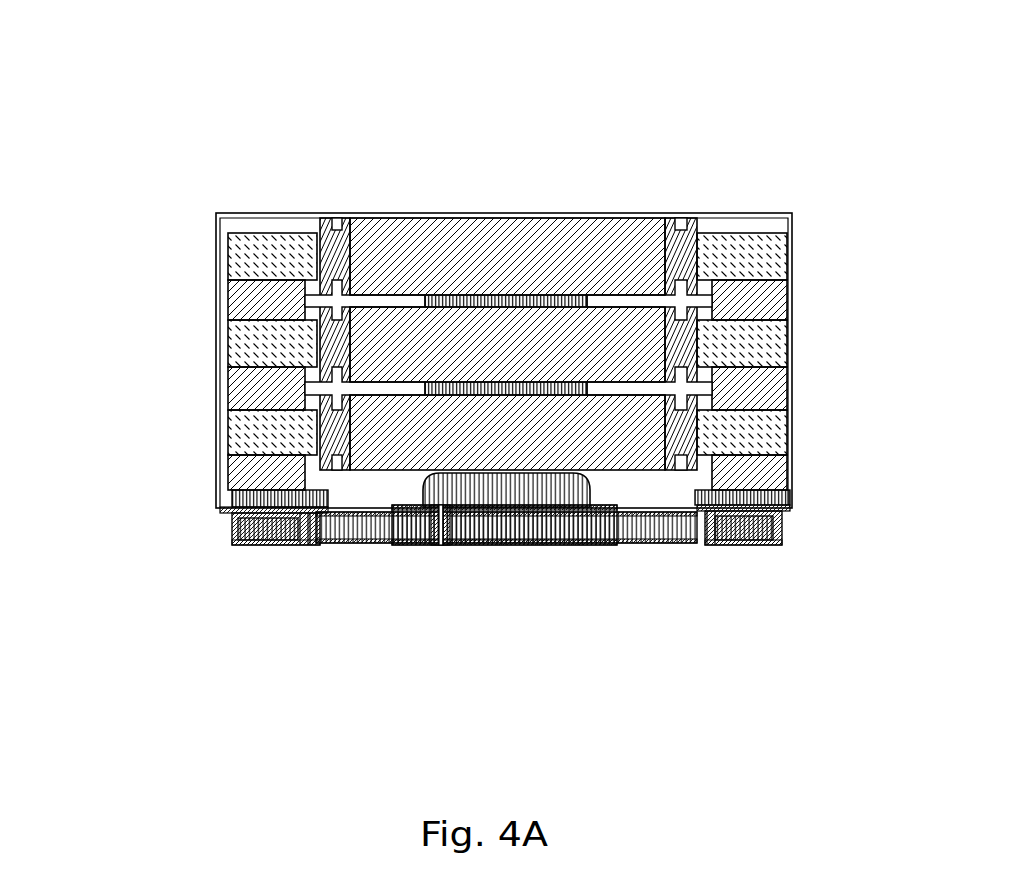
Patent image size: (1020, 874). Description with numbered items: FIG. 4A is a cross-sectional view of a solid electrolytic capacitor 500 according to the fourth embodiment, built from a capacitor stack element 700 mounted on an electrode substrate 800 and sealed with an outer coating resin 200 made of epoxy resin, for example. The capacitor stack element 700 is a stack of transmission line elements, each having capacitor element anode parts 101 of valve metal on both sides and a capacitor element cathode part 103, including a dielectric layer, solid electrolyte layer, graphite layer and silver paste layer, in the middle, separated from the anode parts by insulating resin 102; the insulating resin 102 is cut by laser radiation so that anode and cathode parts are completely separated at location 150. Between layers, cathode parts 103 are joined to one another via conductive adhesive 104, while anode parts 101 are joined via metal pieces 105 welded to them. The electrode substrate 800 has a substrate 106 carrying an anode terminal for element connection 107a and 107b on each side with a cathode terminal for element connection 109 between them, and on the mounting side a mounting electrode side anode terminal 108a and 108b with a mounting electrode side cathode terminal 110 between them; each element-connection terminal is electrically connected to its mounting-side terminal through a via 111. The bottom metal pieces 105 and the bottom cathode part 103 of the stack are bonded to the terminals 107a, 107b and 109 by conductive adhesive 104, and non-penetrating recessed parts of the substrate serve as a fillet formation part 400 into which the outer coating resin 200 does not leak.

The capacitor element anode part 101 is at (245, 255).
The insulating resin 102 is at (324, 222).
The capacitor element cathode part 103 is at (380, 240).
The conductive adhesive 104 is at (450, 293).
The metal piece 105 is at (245, 300).
The substrate 106 is at (272, 546).
The anode terminal for element connection 107a is at (222, 508).
The anode terminal for element connection 107b is at (785, 511).
The mounting electrode side anode terminal 108a is at (240, 546).
The mounting electrode side anode terminal 108b is at (773, 546).
The cathode terminal for element connection 109 is at (543, 545).
The mounting electrode side cathode terminal 110 is at (582, 545).
The via 111 is at (305, 546).
The separation of anode part and cathode part 150 is at (684, 211).
The outer coating resin 200 is at (282, 224).
The fillet formation part 400 is at (230, 548).
The solid electrolytic capacitor 500 is at (457, 93).
The capacitor stack element 700 is at (486, 378).
The electrode substrate 800 is at (484, 598).